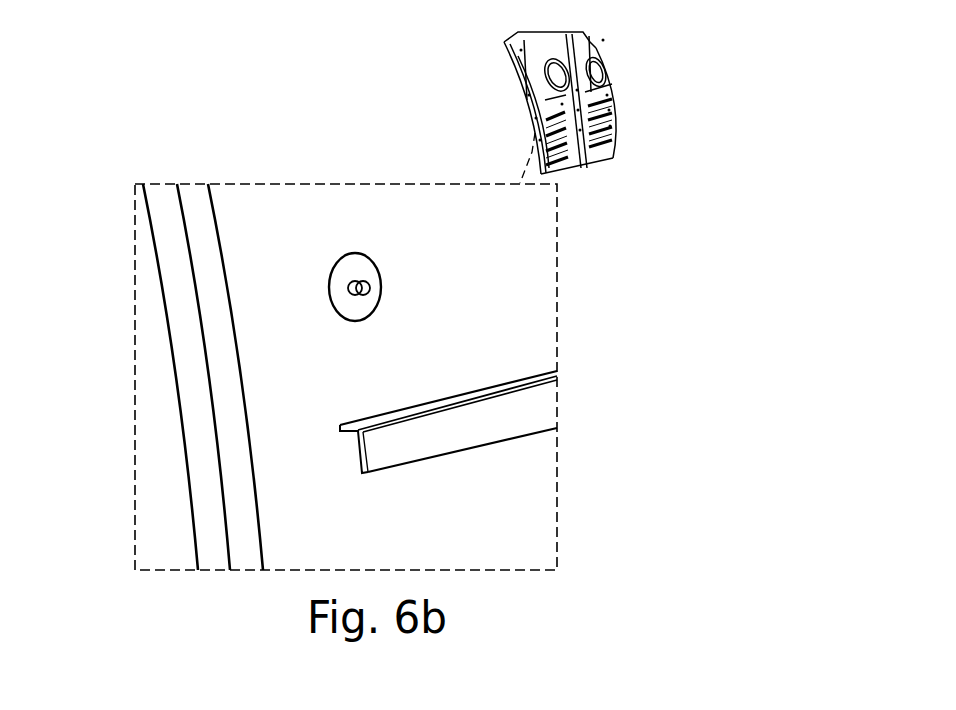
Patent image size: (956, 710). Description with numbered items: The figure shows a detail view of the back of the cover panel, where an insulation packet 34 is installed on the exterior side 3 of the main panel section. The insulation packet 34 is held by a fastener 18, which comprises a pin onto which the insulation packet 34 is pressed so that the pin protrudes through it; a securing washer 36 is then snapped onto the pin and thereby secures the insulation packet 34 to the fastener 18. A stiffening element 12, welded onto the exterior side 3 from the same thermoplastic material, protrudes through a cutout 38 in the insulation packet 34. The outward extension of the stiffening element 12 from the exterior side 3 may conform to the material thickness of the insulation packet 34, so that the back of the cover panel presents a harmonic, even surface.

The exterior side 3 is at (262, 226).
The stiffening elements 12 is at (533, 413).
The fasteners 18 is at (367, 279).
The insulation packets 34 is at (207, 243).
The securing washer 36 is at (353, 268).
The cutouts 38 is at (367, 412).